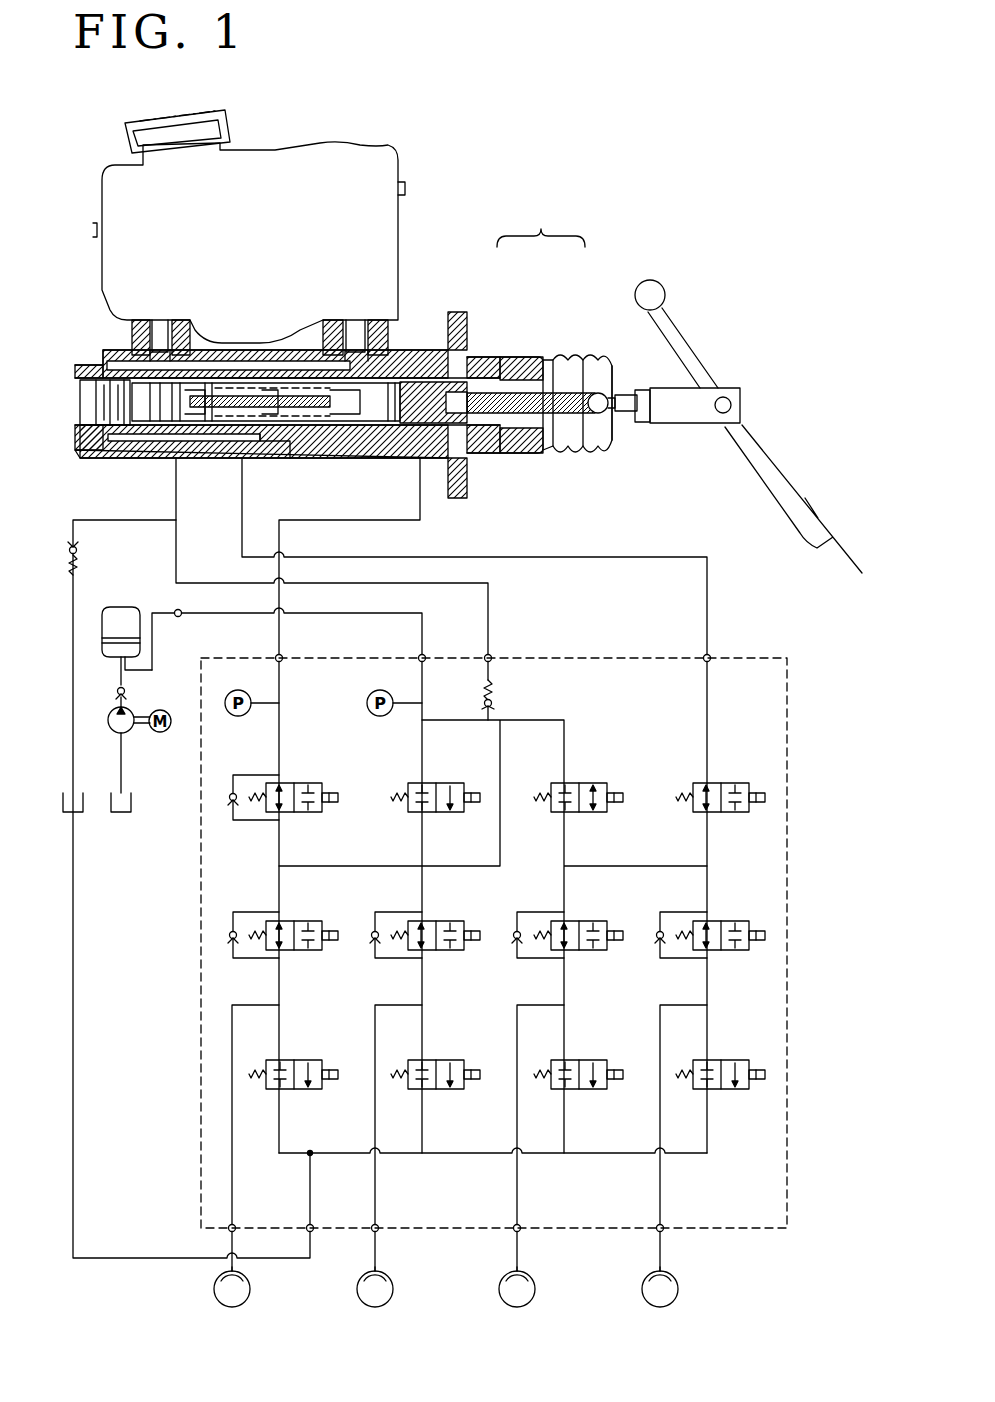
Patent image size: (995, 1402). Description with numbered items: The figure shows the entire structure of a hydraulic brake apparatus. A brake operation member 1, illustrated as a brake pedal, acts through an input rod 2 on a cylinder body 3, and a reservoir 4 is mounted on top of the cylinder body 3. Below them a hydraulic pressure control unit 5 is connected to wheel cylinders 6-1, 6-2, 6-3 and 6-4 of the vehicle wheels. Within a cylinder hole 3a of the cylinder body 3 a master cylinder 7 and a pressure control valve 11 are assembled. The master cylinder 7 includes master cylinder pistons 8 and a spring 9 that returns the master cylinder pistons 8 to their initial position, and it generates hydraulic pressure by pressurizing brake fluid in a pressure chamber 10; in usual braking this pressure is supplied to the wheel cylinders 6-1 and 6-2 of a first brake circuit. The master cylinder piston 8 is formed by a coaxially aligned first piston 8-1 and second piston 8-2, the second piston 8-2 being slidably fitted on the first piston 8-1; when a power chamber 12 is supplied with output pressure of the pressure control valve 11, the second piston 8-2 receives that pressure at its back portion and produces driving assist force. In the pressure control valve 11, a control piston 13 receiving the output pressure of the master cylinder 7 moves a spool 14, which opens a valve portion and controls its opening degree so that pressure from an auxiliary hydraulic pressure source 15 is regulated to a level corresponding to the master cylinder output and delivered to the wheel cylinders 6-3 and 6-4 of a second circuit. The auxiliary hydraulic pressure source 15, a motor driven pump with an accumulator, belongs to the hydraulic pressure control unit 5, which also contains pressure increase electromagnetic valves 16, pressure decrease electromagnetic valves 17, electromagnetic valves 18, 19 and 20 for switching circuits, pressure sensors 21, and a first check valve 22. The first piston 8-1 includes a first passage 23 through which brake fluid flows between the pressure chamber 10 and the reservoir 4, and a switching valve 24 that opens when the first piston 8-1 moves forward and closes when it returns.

The brake operation member 1 is at (765, 460).
The input rod 2 is at (614, 420).
The cylinder body 3 is at (418, 357).
The cylinder hole 3a is at (270, 440).
The reservoir 4 is at (355, 167).
The hydraulic pressure control unit 5 is at (789, 706).
The wheel cylinder 6-1 is at (249, 1276).
The wheel cylinder 6-2 is at (392, 1276).
The wheel cylinder 6-3 is at (534, 1276).
The wheel cylinder 6-4 is at (677, 1276).
The master cylinder 7 is at (488, 455).
The master cylinder piston 8 is at (541, 223).
The first piston 8-1 is at (473, 357).
The second piston 8-2 is at (537, 357).
The spring 9 is at (352, 450).
The pressure chamber 10 is at (321, 430).
The pressure control valve 11 is at (214, 445).
The power chamber 12 is at (510, 446).
The control piston 13 is at (142, 338).
The spool 14 is at (176, 455).
The auxiliary hydraulic pressure source 15 is at (101, 635).
The pressure increase electromagnetic valve 16 is at (306, 951).
The pressure decrease electromagnetic valve 17 is at (306, 1090).
The electromagnetic valve 18 is at (306, 813).
The electromagnetic valve 19 is at (449, 813).
The electromagnetic valve 20 is at (733, 813).
The pressure sensor 21 is at (238, 716).
The first check valve 22 is at (494, 703).
The first passage 23 is at (458, 470).
The switching valve 24 is at (393, 455).